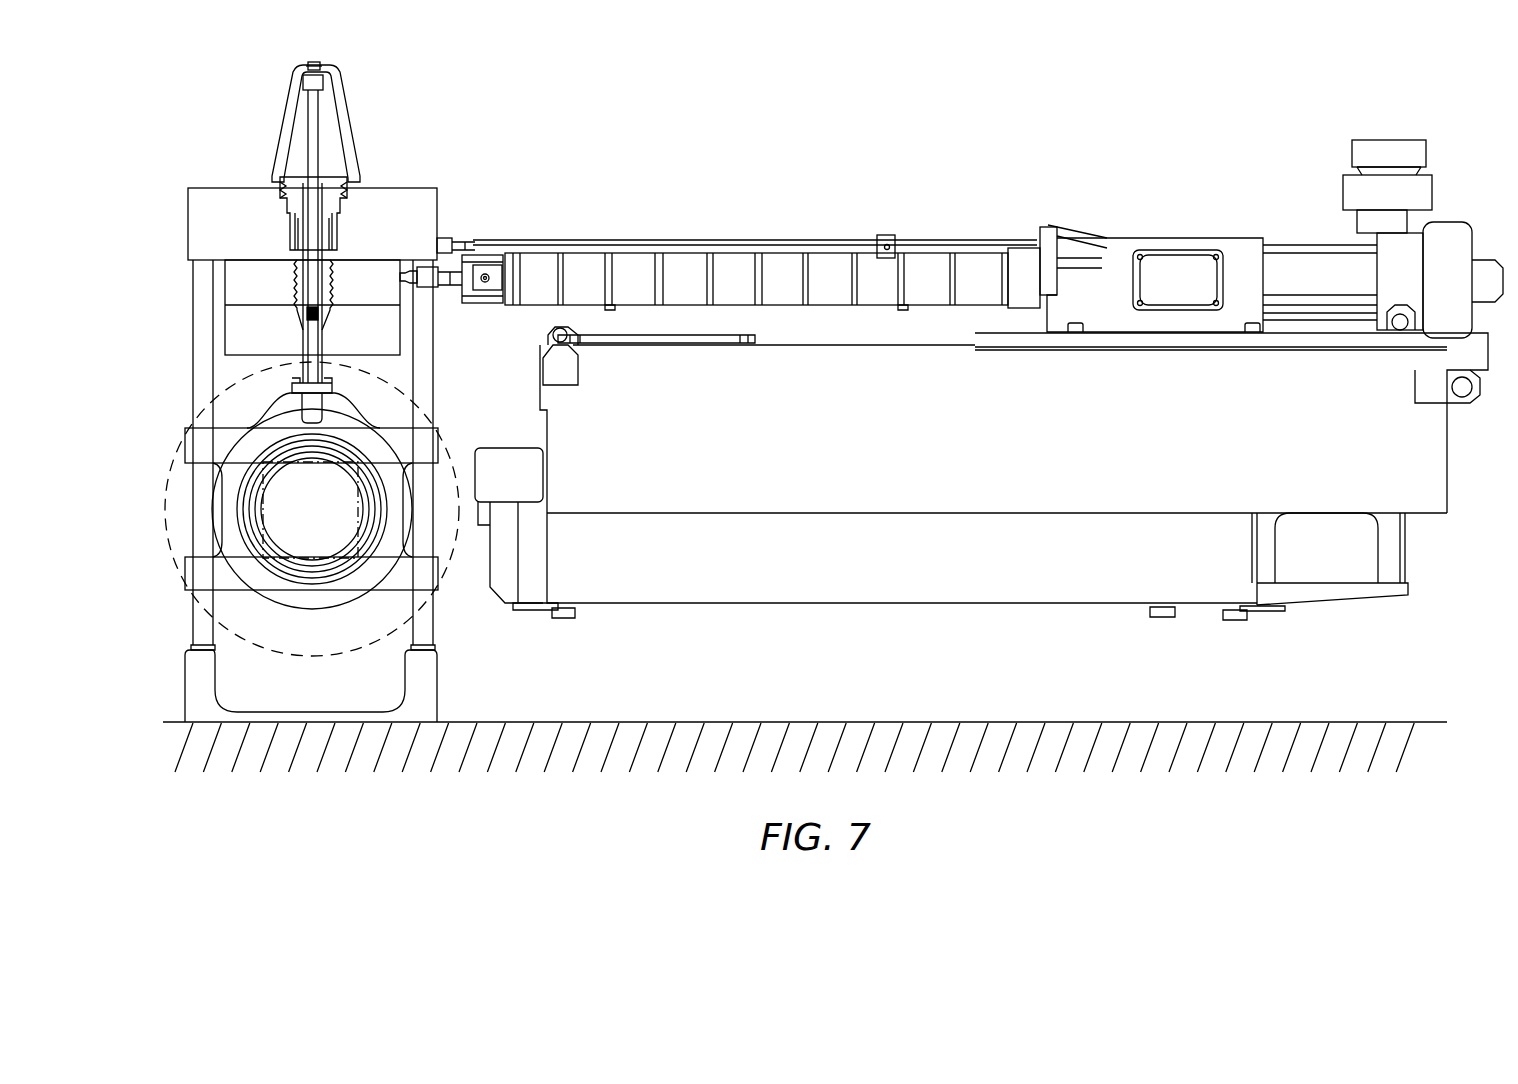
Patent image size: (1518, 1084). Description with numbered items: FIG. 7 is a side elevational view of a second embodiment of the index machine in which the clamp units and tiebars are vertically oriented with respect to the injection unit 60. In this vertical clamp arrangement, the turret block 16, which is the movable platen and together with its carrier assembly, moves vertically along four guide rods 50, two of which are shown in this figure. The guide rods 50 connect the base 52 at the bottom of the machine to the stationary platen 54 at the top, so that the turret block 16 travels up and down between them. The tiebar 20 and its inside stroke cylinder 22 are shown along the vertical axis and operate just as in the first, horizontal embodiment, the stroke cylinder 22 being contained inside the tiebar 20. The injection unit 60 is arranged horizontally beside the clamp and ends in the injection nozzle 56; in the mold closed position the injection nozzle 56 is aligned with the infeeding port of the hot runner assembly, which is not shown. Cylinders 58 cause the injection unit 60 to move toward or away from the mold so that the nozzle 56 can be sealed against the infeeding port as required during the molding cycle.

The turret block 16 is at (275, 568).
The tiebar 20 is at (325, 335).
The stroke cylinder 22 is at (310, 372).
The guide rods 50 is at (205, 315).
The base 52 is at (435, 705).
The stationary platen 54 is at (397, 190).
The injection nozzle 56 is at (403, 272).
The cylinders 58 is at (930, 243).
The injection unit 60 is at (982, 373).